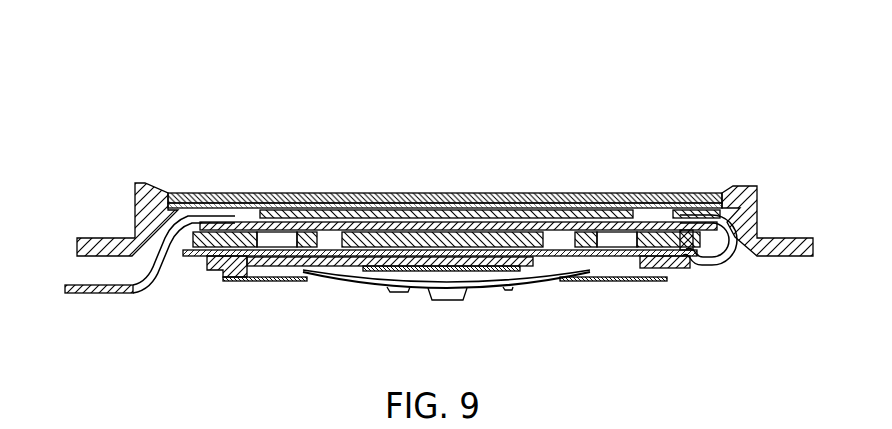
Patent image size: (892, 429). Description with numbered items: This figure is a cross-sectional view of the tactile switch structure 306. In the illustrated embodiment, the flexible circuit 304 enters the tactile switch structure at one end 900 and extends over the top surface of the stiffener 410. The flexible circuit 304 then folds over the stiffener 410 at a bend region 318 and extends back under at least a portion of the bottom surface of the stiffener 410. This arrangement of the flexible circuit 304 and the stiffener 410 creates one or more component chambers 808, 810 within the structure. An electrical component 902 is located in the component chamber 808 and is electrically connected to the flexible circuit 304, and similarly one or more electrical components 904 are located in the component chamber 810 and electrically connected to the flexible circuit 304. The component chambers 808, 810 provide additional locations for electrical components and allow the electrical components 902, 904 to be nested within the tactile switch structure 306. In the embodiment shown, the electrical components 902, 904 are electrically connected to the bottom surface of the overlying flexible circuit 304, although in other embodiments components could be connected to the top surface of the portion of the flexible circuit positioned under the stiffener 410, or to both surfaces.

The tactile switch structure 306 is at (340, 114).
The stiffener 410 is at (227, 233).
The component chamber 808 is at (272, 248).
The component chamber 810 is at (615, 248).
The electrical component 902 is at (305, 246).
The electrical component 904 is at (586, 246).
The bend region 318 is at (724, 263).
The flexible circuit 304 is at (113, 294).
The end 900 is at (146, 311).